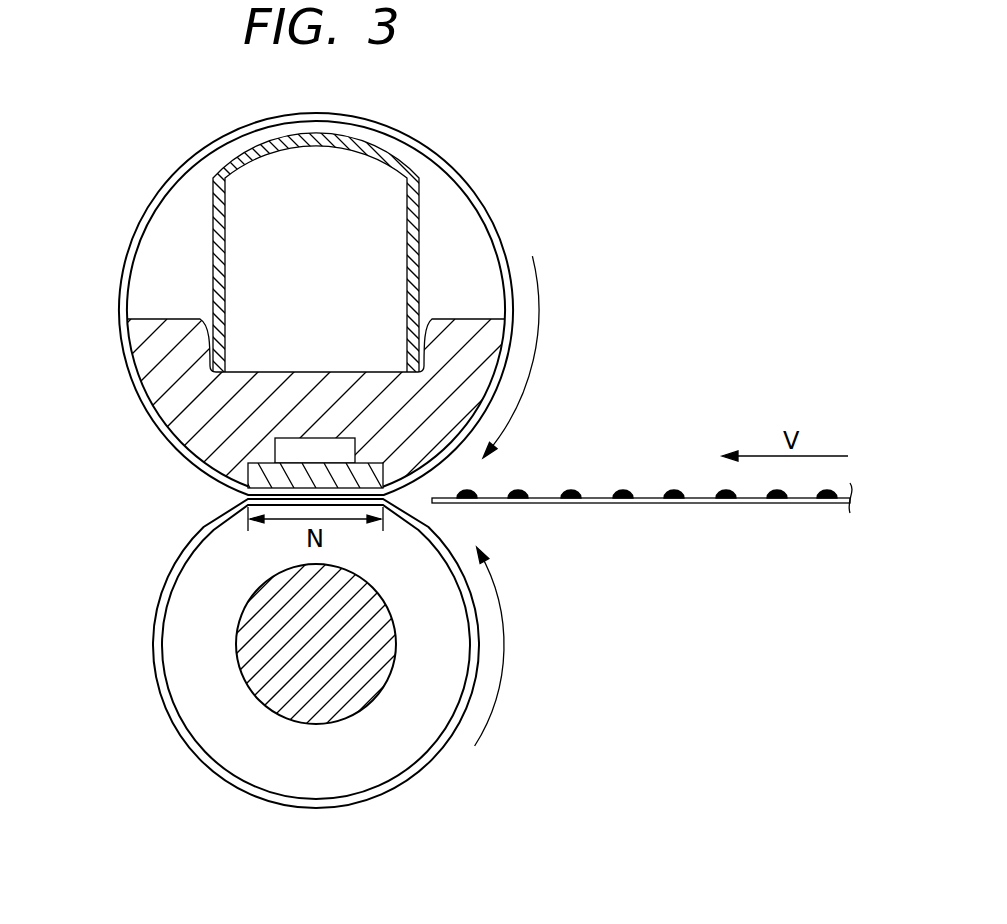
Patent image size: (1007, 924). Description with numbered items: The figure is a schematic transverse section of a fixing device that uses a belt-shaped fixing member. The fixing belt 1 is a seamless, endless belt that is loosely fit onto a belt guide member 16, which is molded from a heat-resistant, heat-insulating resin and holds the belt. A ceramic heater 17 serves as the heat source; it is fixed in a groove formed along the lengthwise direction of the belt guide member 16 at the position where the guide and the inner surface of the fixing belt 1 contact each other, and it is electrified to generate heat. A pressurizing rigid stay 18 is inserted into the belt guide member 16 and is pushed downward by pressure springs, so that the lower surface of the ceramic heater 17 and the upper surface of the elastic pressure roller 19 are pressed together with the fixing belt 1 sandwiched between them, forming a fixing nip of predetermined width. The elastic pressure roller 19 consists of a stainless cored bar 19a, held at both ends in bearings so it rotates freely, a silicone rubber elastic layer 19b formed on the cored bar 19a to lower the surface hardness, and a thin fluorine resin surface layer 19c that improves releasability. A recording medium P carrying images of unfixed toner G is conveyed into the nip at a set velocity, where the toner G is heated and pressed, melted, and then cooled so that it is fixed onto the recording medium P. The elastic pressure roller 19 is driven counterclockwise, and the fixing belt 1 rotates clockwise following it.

The fixing belt 1 is at (219, 139).
The belt guide member 16 is at (158, 319).
The ceramic heater 17 is at (264, 474).
The pressurizing rigid stay 18 is at (219, 205).
The elastic pressure roller 19 is at (268, 653).
The cored bar 19a is at (250, 598).
The elastic layer 19b is at (176, 643).
The surface layer 19c is at (165, 706).
The recording medium P is at (646, 504).
The unfixed toner G is at (621, 490).